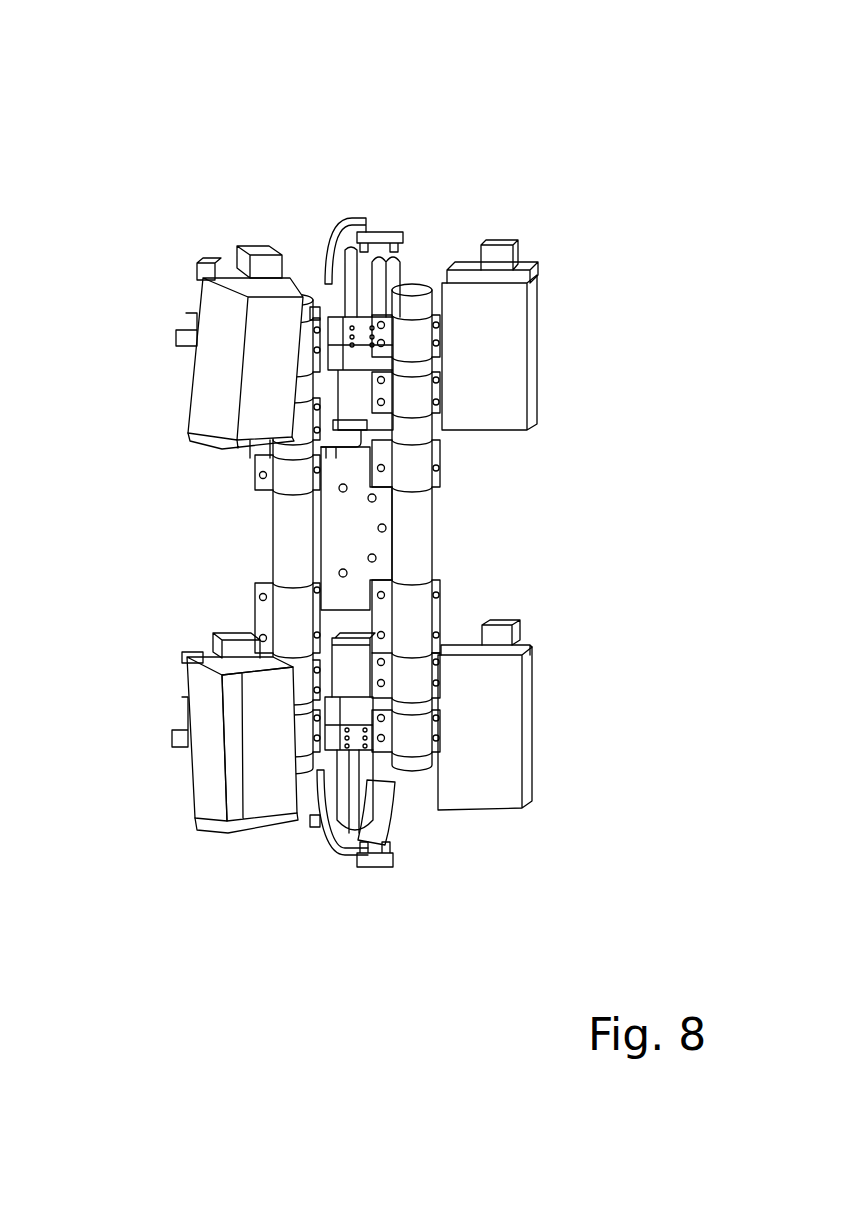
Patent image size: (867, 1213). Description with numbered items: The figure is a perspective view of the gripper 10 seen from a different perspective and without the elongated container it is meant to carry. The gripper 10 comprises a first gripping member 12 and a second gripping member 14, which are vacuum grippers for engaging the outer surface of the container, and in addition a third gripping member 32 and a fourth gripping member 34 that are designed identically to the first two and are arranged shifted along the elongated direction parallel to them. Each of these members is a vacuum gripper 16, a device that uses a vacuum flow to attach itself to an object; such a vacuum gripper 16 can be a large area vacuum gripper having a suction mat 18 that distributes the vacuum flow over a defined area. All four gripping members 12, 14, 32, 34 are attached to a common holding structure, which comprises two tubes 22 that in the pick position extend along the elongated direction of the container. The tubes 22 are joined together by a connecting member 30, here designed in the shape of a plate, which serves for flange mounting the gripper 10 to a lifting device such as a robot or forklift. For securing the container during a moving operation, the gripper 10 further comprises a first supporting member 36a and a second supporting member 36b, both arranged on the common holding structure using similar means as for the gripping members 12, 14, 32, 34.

The gripper 10 is at (472, 142).
The first gripping member 12 is at (548, 730).
The second gripping member 14 is at (178, 757).
The vacuum gripper 16 is at (207, 800).
The suction mat 18 is at (262, 797).
The tube 22 is at (415, 530).
The connecting member 30 is at (263, 530).
The third gripping member 32 is at (548, 342).
The fourth gripping member 34 is at (180, 369).
The first supporting member 36a is at (373, 210).
The second supporting member 36b is at (375, 886).